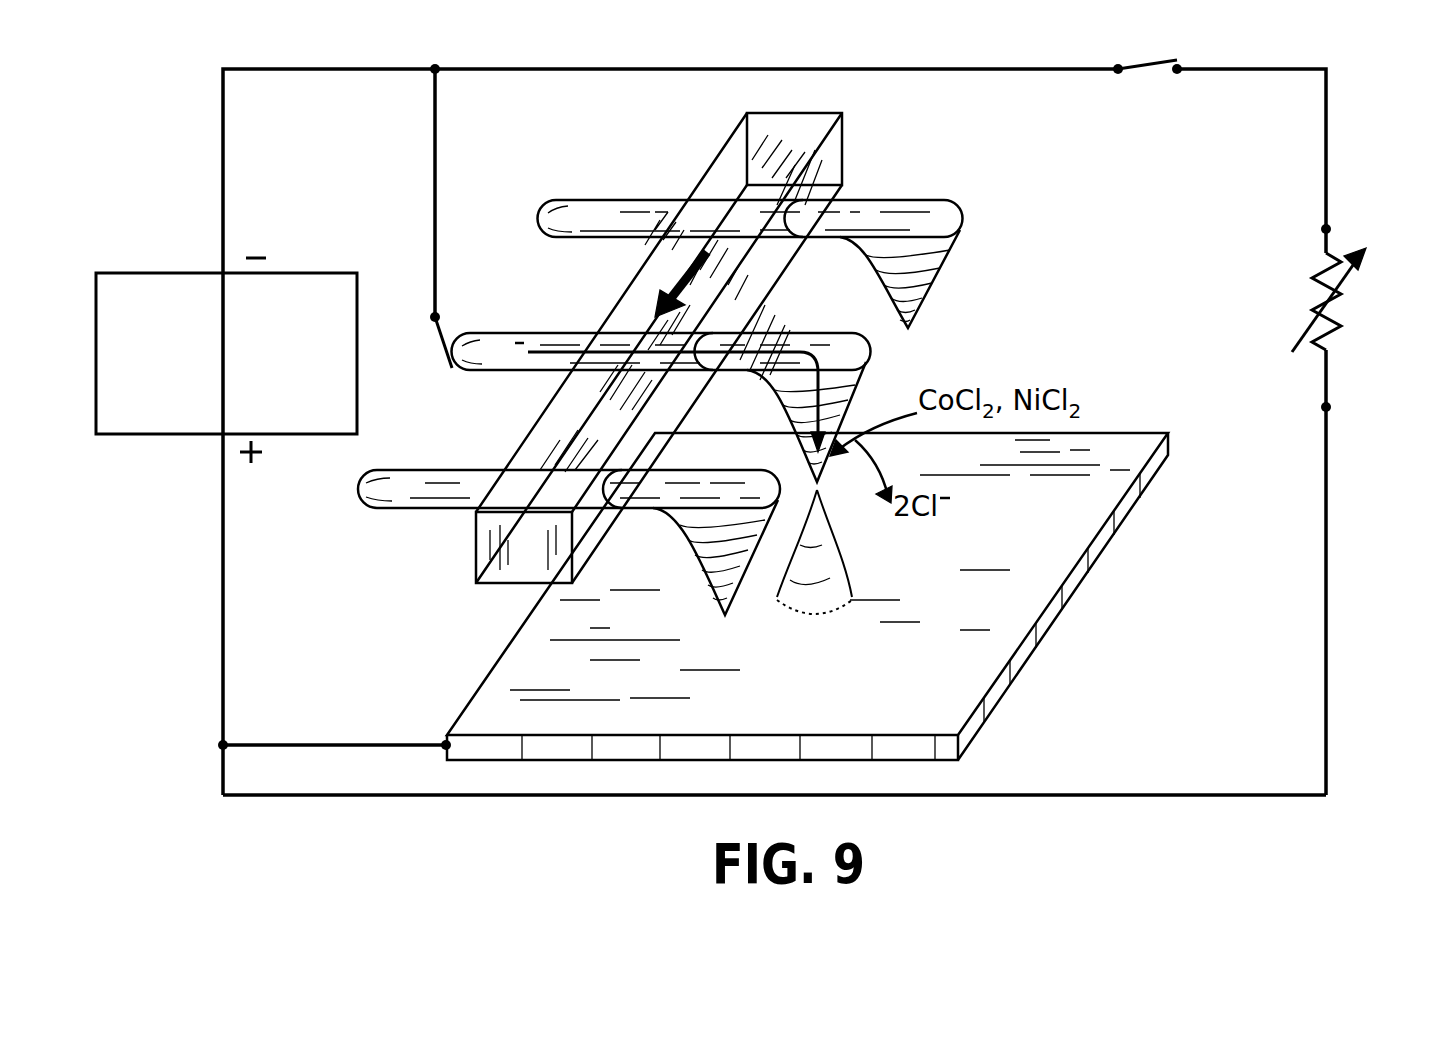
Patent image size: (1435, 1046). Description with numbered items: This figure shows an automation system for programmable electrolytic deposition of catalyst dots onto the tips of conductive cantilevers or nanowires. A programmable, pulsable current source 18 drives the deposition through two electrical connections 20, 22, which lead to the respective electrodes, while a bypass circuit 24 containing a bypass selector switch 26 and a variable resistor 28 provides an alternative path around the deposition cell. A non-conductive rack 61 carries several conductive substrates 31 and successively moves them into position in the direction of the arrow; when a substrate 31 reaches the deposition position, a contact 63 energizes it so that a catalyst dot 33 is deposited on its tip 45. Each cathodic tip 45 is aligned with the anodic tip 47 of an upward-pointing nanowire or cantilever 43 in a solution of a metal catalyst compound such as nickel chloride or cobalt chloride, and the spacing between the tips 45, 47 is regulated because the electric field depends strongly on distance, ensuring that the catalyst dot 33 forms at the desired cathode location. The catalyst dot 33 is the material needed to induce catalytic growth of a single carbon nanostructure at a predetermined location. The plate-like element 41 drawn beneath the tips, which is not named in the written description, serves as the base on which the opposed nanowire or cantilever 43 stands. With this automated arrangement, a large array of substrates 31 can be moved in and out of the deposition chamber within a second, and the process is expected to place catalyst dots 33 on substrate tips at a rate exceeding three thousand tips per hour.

The programmable, pulsable current source 18 is at (152, 434).
The electrical connection 20 is at (223, 640).
The electrical connection 22 is at (223, 180).
The bypass circuit 24 is at (1326, 625).
The bypass selector switch 26 is at (1137, 62).
The variable resistor 28 is at (1338, 330).
The substrate 31 is at (935, 200).
The catalyst dot 33 is at (727, 620).
The substrate plate 41 is at (1015, 673).
The nanowire or cantilever 43 is at (828, 600).
The tip 45 is at (917, 305).
The tip 47 is at (817, 490).
The non-conductive rack 61 is at (843, 135).
The contact 63 is at (447, 350).